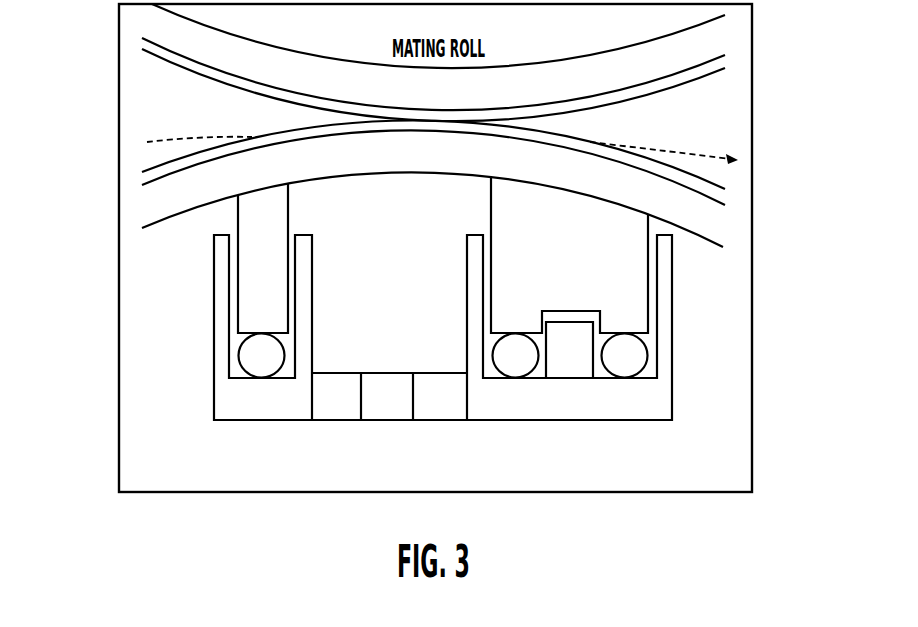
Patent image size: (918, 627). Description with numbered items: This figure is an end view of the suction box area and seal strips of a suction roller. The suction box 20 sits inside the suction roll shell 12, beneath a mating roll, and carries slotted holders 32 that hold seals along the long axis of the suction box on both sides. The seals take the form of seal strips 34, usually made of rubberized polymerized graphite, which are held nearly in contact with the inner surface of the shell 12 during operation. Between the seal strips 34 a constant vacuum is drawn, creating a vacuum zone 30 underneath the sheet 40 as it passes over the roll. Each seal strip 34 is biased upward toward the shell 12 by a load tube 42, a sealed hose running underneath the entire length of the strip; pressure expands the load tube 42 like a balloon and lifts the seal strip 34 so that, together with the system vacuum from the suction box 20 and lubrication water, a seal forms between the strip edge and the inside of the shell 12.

The shell 12 is at (147, 210).
The suction box 20 is at (92, 290).
The vacuum zone 30 is at (339, 362).
The slotted holder 32 is at (233, 398).
The seal strips 34 is at (255, 286).
The sheet 40 is at (722, 155).
The load tubes 42 is at (255, 351).